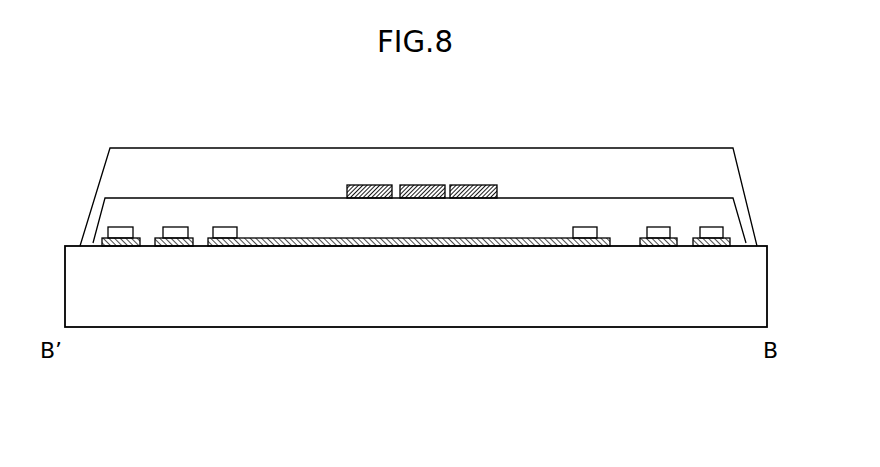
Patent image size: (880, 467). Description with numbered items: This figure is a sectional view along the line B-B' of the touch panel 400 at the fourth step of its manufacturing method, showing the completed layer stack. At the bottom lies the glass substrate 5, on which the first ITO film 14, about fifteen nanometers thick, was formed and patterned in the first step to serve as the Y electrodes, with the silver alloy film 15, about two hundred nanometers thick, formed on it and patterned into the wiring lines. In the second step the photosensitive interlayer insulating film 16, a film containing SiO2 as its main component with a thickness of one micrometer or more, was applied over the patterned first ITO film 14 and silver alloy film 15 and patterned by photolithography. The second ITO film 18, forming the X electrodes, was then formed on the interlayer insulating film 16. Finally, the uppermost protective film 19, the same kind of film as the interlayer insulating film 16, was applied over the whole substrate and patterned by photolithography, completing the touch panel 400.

The glass substrate 5 is at (403, 292).
The first ITO film 14 is at (303, 238).
The silver alloy film 15 is at (223, 227).
The interlayer insulating film 16 is at (540, 217).
The second ITO film 18 is at (468, 185).
The uppermost protective film 19 is at (624, 160).
The touch panel 400 is at (416, 240).